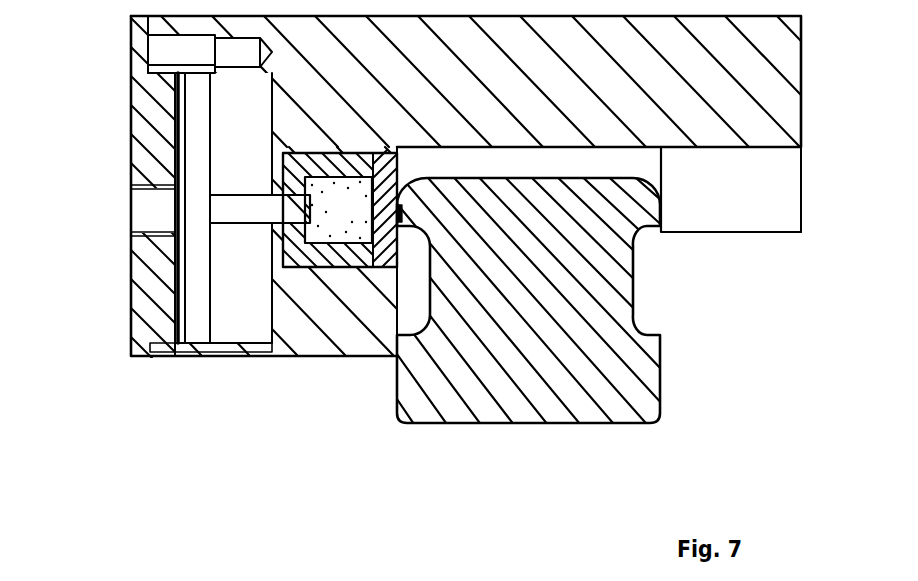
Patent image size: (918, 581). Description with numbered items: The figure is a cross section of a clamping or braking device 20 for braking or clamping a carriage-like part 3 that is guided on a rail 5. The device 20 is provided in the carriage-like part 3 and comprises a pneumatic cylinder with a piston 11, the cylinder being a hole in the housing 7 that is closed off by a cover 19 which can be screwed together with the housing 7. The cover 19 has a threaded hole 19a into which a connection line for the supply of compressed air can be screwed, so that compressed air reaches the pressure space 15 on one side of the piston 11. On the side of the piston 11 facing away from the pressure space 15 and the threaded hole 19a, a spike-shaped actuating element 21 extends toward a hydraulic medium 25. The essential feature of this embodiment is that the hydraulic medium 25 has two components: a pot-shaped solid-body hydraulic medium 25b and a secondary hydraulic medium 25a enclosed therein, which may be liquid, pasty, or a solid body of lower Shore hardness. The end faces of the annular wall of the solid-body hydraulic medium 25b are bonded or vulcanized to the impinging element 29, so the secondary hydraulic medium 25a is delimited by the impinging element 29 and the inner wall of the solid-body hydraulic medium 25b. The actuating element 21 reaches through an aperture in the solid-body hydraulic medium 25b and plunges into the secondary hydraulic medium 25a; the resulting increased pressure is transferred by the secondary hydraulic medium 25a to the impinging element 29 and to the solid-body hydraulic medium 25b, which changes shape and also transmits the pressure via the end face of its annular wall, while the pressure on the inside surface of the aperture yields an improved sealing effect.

The carriage-like part 3 is at (759, 238).
The rail 5 is at (653, 392).
The housing 7 is at (783, 107).
The piston 11 is at (199, 290).
The pressure space 15 is at (173, 228).
The cover 19 is at (152, 128).
The threaded hole 19a is at (152, 195).
The clamping or braking device 20 is at (108, 326).
The spike-shaped actuating element 21 is at (234, 203).
The hydraulic medium 25 is at (345, 276).
The secondary hydraulic medium 25a is at (338, 210).
The solid-body hydraulic medium 25b is at (311, 254).
The impinging element 29 is at (388, 178).